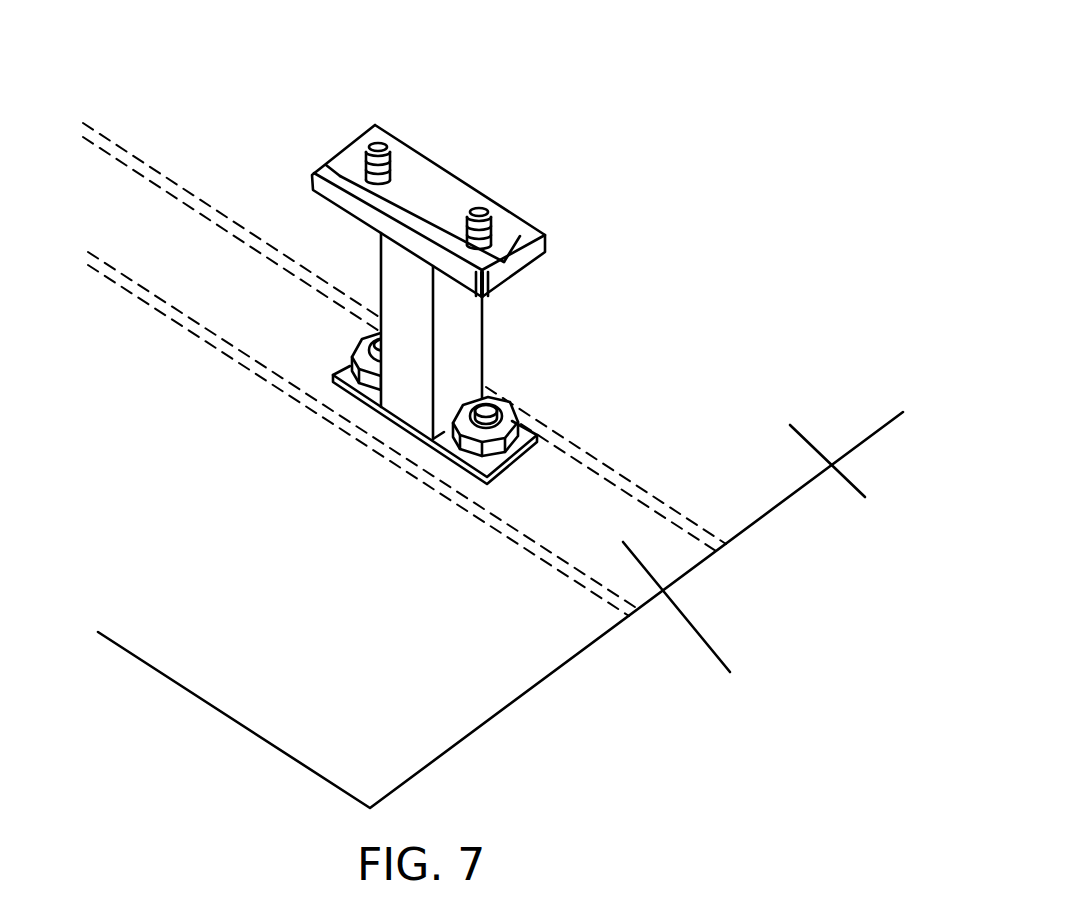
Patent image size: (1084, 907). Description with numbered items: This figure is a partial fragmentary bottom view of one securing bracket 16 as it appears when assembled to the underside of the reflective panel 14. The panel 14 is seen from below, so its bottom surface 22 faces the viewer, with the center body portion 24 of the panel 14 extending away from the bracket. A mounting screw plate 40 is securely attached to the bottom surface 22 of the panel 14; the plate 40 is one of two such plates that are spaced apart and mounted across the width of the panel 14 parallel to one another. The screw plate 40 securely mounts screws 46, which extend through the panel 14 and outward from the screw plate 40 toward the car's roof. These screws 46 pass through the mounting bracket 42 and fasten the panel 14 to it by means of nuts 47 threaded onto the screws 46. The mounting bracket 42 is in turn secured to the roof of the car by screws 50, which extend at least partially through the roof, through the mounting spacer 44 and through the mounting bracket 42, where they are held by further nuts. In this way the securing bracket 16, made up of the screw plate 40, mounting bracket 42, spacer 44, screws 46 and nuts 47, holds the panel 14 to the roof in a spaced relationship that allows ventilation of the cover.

The reflective panel 14 is at (769, 513).
The securing bracket 16 is at (633, 231).
The bottom surface 22 is at (855, 192).
The center body portion 24 is at (848, 488).
The mounting screw plate 40 is at (423, 423).
The mounting bracket 42 is at (468, 343).
The mounting spacer 44 is at (511, 208).
The screw 46 is at (505, 403).
The nut 47 is at (527, 432).
The screw 50 is at (479, 210).